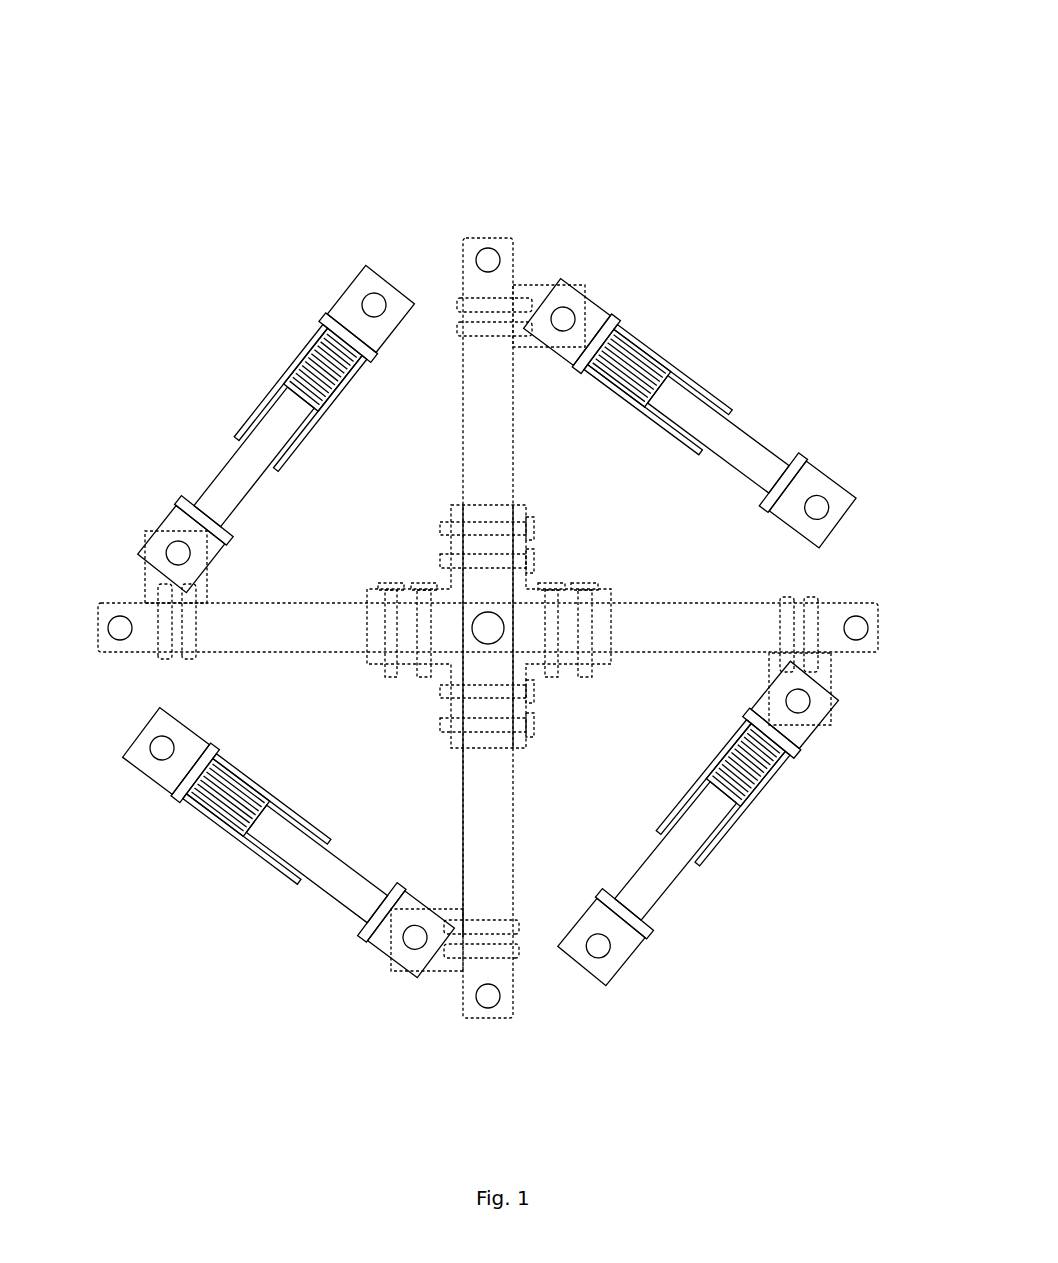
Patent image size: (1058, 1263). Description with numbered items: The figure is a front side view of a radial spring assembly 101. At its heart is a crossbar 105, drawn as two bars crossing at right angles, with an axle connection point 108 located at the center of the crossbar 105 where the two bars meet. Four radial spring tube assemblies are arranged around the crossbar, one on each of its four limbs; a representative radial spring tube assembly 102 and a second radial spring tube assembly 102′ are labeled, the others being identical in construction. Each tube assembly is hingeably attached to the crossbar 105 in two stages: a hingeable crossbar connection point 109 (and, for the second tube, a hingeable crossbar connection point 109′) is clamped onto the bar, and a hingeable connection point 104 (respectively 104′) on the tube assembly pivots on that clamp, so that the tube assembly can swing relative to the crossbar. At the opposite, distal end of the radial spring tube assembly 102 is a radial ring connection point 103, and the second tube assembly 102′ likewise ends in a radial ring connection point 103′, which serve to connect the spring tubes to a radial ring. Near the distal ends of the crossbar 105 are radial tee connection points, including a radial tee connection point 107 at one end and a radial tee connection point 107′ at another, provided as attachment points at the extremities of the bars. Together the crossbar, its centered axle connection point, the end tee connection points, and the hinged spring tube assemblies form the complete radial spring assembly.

The radial spring assembly 101 is at (262, 121).
The radial spring tube assembly 102 is at (706, 393).
The radial spring tube assembly 102′ is at (692, 865).
The radial ring connection point 103 is at (818, 504).
The radial ring connection point 103′ is at (600, 947).
The hingeable connection point 104 is at (562, 318).
The hingeable connection point 104′ is at (800, 703).
The crossbar 105 is at (486, 455).
The radial tee connection point 107 is at (488, 259).
The radial tee connection point 107′ is at (857, 627).
The axle connection point 108 is at (489, 627).
The hingeable crossbar connection point 109 is at (516, 300).
The hingeable crossbar connection point 109′ is at (793, 667).